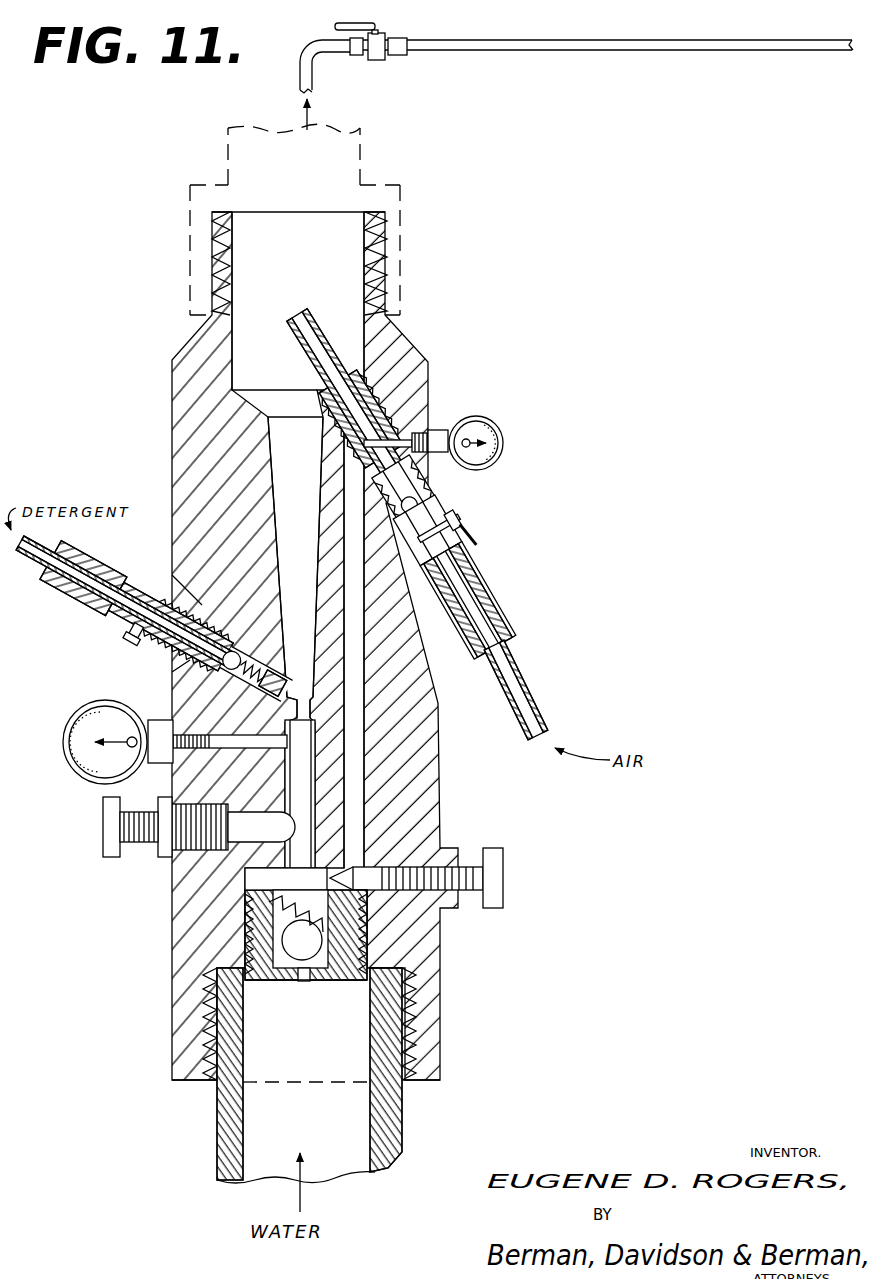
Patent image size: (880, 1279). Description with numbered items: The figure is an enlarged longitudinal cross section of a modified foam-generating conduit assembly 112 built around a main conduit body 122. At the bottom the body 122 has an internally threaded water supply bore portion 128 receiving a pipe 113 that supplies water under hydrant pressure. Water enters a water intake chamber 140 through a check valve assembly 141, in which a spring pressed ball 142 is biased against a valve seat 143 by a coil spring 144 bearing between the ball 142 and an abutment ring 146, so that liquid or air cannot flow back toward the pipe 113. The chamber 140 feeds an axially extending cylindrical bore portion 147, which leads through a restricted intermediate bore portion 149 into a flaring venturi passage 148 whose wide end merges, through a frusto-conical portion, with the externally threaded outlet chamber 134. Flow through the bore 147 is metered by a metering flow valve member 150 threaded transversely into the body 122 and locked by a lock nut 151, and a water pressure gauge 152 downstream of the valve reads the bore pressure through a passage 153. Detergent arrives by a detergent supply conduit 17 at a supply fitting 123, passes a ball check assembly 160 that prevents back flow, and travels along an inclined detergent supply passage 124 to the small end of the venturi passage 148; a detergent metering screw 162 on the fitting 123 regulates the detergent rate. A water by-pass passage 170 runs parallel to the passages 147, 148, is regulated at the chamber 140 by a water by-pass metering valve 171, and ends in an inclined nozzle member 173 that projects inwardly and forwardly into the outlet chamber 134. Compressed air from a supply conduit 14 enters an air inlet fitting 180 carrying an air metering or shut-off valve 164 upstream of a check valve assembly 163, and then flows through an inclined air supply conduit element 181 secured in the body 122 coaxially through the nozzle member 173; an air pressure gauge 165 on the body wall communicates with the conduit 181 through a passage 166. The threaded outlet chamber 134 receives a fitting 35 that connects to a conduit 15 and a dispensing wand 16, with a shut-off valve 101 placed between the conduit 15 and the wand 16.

The compressed air supply conduit 14 is at (538, 708).
The conduit 15 is at (300, 73).
The dispensing wand 16 is at (600, 50).
The detergent supply conduit 17 is at (22, 565).
The fitting 35 is at (404, 206).
The shut-off valve 101 is at (378, 62).
The foam-generating conduit assembly 112 is at (140, 1083).
The water supply pipe 113 is at (388, 1137).
The main conduit body 122 is at (420, 767).
The supply fitting 123 is at (150, 583).
The inclined detergent supply passage 124 is at (277, 677).
The internally threaded water supply bore portion 128 is at (392, 1037).
The outlet chamber 134 is at (338, 263).
The water intake chamber 140 is at (253, 880).
The check valve assembly 141 is at (338, 983).
The spring pressed ball 142 is at (293, 945).
The valve seat 143 is at (320, 980).
The coil spring 144 is at (280, 912).
The abutment ring 146 is at (273, 898).
The cylindrical bore portion 147 is at (290, 765).
The flaring venturi passage 148 is at (282, 475).
The restricted intermediate bore portion 149 is at (250, 402).
The metering flow valve member 150 is at (200, 852).
The lock nut 151 is at (155, 845).
The water pressure gauge 152 is at (75, 722).
The passage 153 is at (228, 748).
The ball check assembly 160 is at (232, 688).
The detergent metering screw 162 is at (130, 634).
The check valve assembly 163 is at (430, 492).
The air metering or shut-off valve 164 is at (453, 522).
The air pressure gauge 165 is at (498, 425).
The passage 166 is at (418, 422).
The water by-pass passage 170 is at (358, 676).
The water by-pass metering valve 171 is at (366, 868).
The inclined nozzle member 173 is at (300, 355).
The air inlet fitting 180 is at (460, 572).
The inclined air supply conduit element 181 is at (400, 407).